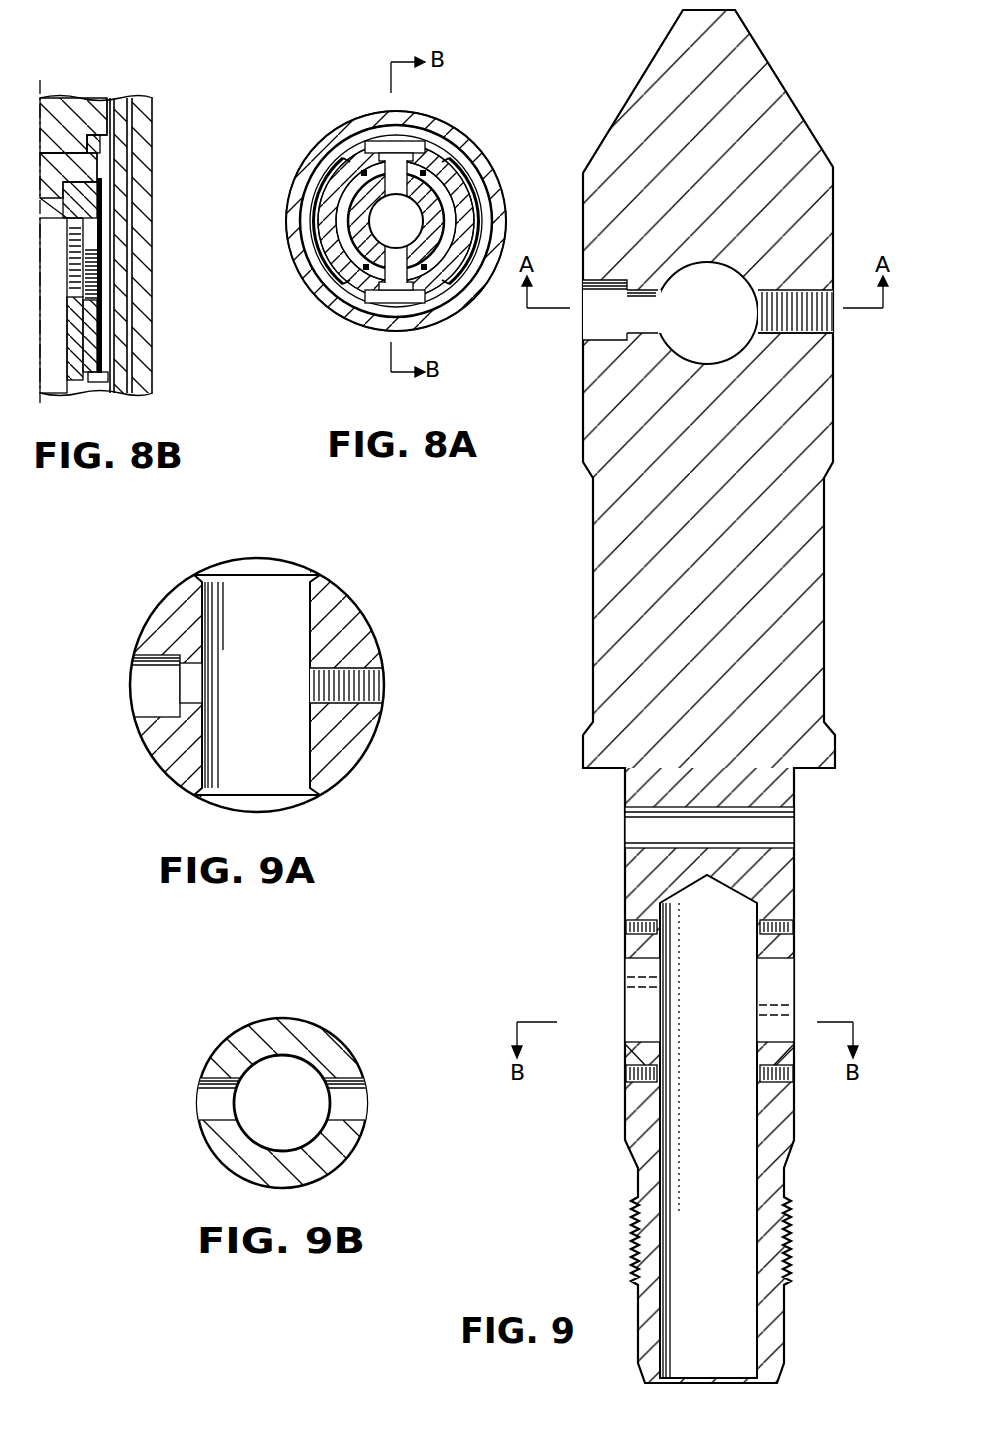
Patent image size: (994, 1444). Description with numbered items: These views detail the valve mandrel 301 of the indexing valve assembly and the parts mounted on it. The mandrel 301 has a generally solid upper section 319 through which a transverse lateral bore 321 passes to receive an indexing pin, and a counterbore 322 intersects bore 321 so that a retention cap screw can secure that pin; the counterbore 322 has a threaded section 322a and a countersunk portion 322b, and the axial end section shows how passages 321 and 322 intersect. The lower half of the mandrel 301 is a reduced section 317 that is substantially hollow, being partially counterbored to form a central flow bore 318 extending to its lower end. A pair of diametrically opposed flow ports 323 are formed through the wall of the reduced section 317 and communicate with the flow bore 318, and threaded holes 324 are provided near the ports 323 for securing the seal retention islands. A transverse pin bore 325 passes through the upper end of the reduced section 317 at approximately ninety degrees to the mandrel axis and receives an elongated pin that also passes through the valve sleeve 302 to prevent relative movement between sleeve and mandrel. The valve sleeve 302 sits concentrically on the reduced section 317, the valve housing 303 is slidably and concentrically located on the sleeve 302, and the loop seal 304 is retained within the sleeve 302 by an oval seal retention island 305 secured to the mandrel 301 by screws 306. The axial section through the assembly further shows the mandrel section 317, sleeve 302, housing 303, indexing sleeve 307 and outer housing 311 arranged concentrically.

In FIG. 9, the valve mandrel 301 is at (795, 526).
In FIG. 8A, the valve sleeve 302 is at (455, 157).
In FIG. 8A, the valve housing 303 is at (337, 304).
In FIG. 8B, the loop seal 304 is at (98, 348).
In FIG. 8A, the oval seal retention island 305 is at (400, 150).
In FIG. 8B, the oval seal retention island 305 is at (103, 270).
In FIG. 8B, the screws 306 is at (97, 318).
In FIG. 8A, the indexing sleeve 307 is at (308, 192).
In FIG. 8A, the housing 311 is at (292, 207).
In FIG. 9, the reduced section 317 is at (795, 1135).
In FIG. 9B, the reduced section 317 is at (347, 1157).
In FIG. 8A, the reduced section 317 is at (423, 207).
In FIG. 9, the flow bore 318 is at (721, 981).
In FIG. 9B, the flow bore 318 is at (293, 1097).
In FIG. 9, the upper section 319 is at (780, 440).
In FIG. 9, the transverse lateral bore 321 is at (725, 318).
In FIG. 9A, the transverse lateral bore 321 is at (273, 753).
In FIG. 9, the counterbore 322 is at (800, 313).
In FIG. 9A, the counterbore 322 is at (350, 686).
In FIG. 9, the threaded section 322a is at (803, 332).
In FIG. 9, the countersunk portion 322b is at (607, 333).
In FIG. 9, the flow ports 323 is at (635, 998).
In FIG. 9B, the flow ports 323 is at (360, 1102).
In FIG. 9, the threaded holes 324 is at (628, 926).
In FIG. 9, the transverse pin bore 325 is at (716, 838).